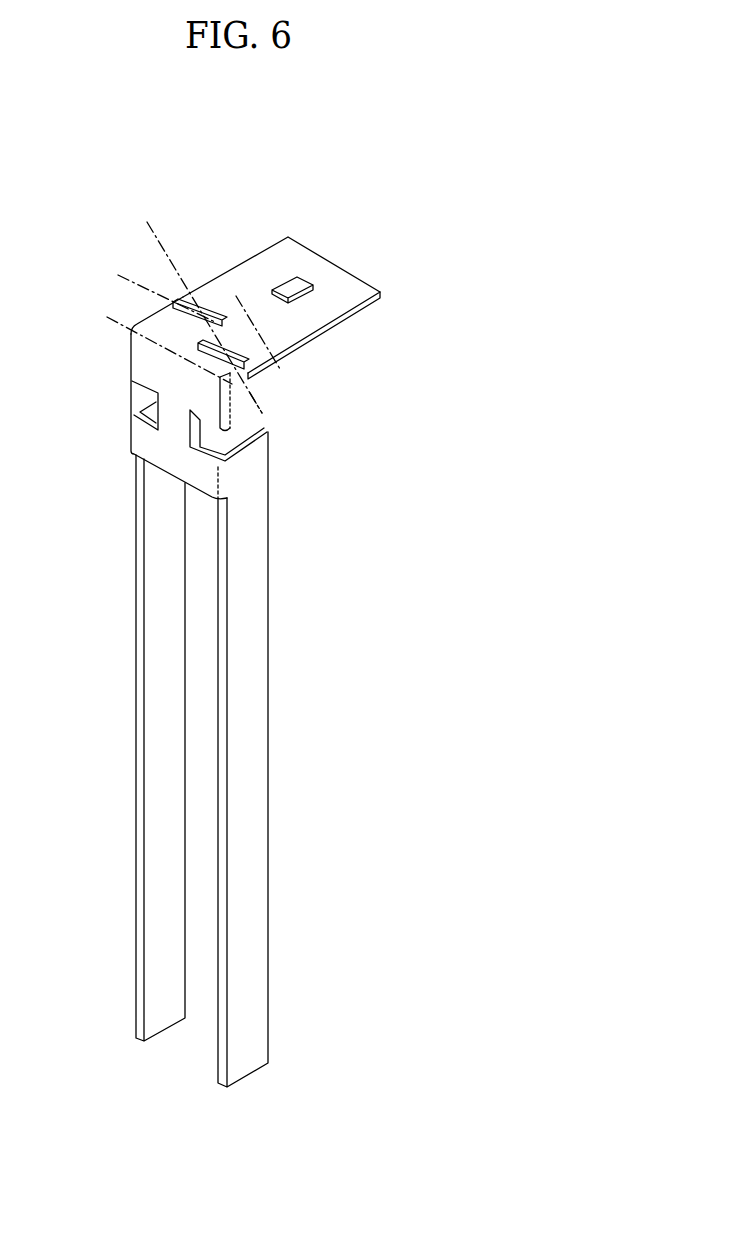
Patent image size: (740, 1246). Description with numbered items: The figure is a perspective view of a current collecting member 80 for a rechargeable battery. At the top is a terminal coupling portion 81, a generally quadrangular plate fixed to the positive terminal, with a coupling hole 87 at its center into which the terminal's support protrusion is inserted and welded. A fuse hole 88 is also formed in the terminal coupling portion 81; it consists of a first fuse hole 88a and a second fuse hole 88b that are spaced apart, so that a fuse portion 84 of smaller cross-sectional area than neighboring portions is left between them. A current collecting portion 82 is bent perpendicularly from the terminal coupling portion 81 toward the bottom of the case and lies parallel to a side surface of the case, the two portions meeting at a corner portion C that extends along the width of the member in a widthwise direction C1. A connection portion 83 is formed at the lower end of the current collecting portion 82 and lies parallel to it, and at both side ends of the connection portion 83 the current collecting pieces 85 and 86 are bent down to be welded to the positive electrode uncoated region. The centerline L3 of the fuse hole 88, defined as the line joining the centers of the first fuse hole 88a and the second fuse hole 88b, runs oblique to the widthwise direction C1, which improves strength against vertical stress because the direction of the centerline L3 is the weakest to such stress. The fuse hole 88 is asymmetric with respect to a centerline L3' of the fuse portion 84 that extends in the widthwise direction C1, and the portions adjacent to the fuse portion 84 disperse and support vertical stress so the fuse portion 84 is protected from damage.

The current collecting member 80 is at (228, 617).
The terminal coupling portion 81 is at (308, 265).
The current collecting portion 82 is at (133, 353).
The connection portion 83 is at (173, 455).
The fuse portion 84 is at (173, 302).
The current collecting piece 85 is at (253, 675).
The current collecting piece 86 is at (140, 613).
The coupling hole 87 is at (307, 292).
The fuse hole 88 is at (219, 261).
The first fuse hole 88a is at (213, 312).
The second fuse hole 88b is at (226, 375).
The corner portion C is at (162, 348).
The widthwise direction C1 is at (266, 412).
The centerline of the fuse hole L3 is at (173, 312).
The centerline of the fuse portion L3' is at (286, 349).